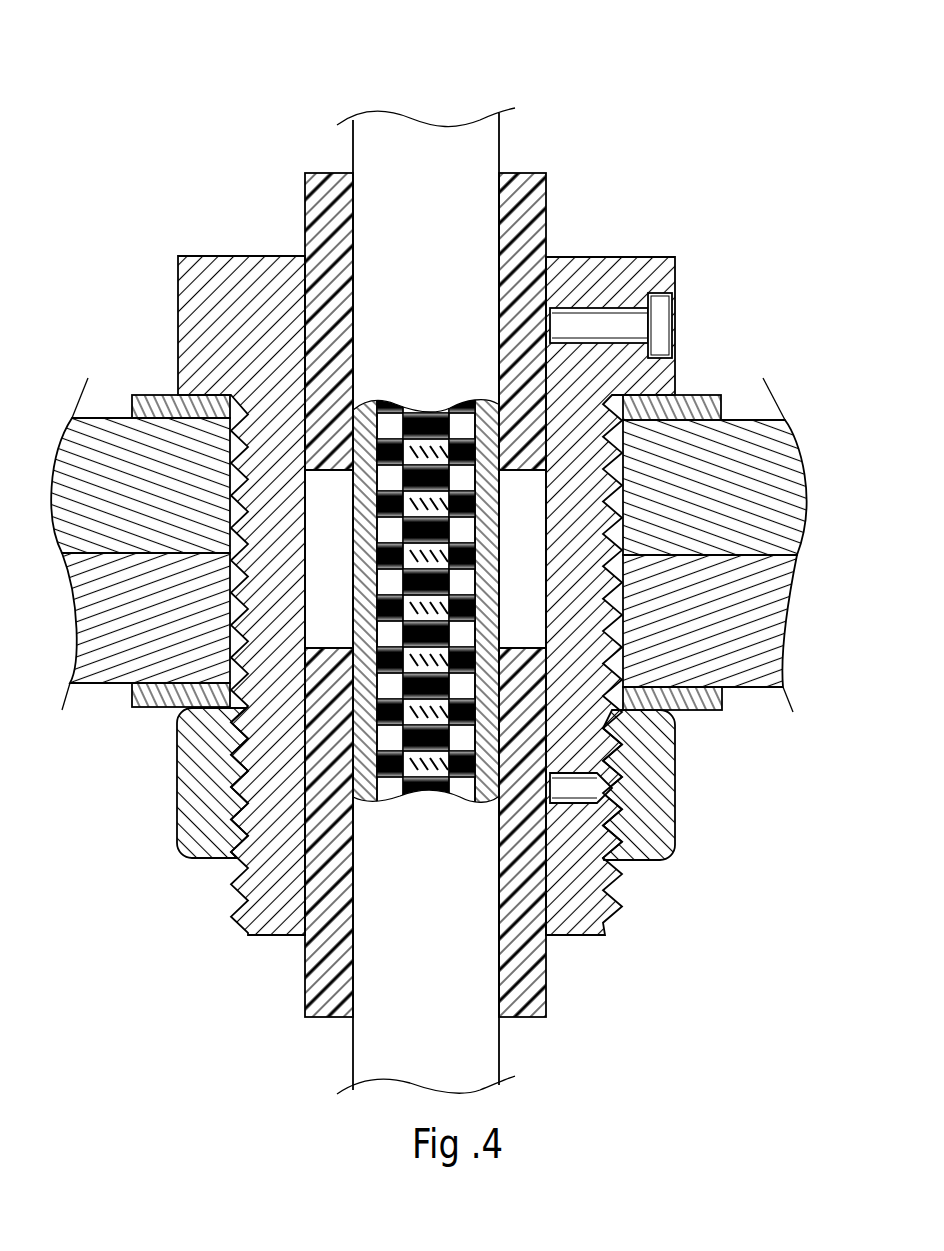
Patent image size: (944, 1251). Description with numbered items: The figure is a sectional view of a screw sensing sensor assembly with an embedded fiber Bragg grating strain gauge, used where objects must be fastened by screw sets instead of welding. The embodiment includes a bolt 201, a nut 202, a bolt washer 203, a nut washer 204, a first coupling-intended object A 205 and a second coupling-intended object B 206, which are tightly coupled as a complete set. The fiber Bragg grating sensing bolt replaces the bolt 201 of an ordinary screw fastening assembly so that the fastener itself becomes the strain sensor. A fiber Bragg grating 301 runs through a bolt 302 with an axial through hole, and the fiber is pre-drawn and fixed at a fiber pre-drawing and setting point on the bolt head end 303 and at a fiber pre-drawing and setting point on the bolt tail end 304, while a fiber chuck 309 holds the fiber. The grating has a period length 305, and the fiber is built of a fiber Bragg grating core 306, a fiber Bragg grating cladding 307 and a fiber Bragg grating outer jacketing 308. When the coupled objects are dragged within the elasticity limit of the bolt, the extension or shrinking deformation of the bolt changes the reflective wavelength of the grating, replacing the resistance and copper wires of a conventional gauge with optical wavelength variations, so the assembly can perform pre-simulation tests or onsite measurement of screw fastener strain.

The bolt 201 is at (220, 317).
The nut 202 is at (650, 840).
The bolt washer 203 is at (703, 398).
The nut washer 204 is at (688, 704).
The first coupling-intended object A 205 is at (750, 457).
The second coupling-intended object B 206 is at (747, 673).
The fiber Bragg grating 301 is at (415, 170).
The bolt with an axial through hole 302 is at (587, 270).
The fiber pre-drawing and setting point on the bolt head end 303 is at (655, 330).
The fiber pre-drawing and setting point on the bolt tail end 304 is at (582, 790).
The period length of the fiber Bragg grating 305 is at (452, 577).
The fiber Bragg grating core 306 is at (425, 425).
The fiber Bragg grating cladding 307 is at (380, 507).
The fiber Bragg grating outer jacketing 308 is at (355, 583).
The fiber chuck 309 is at (520, 960).